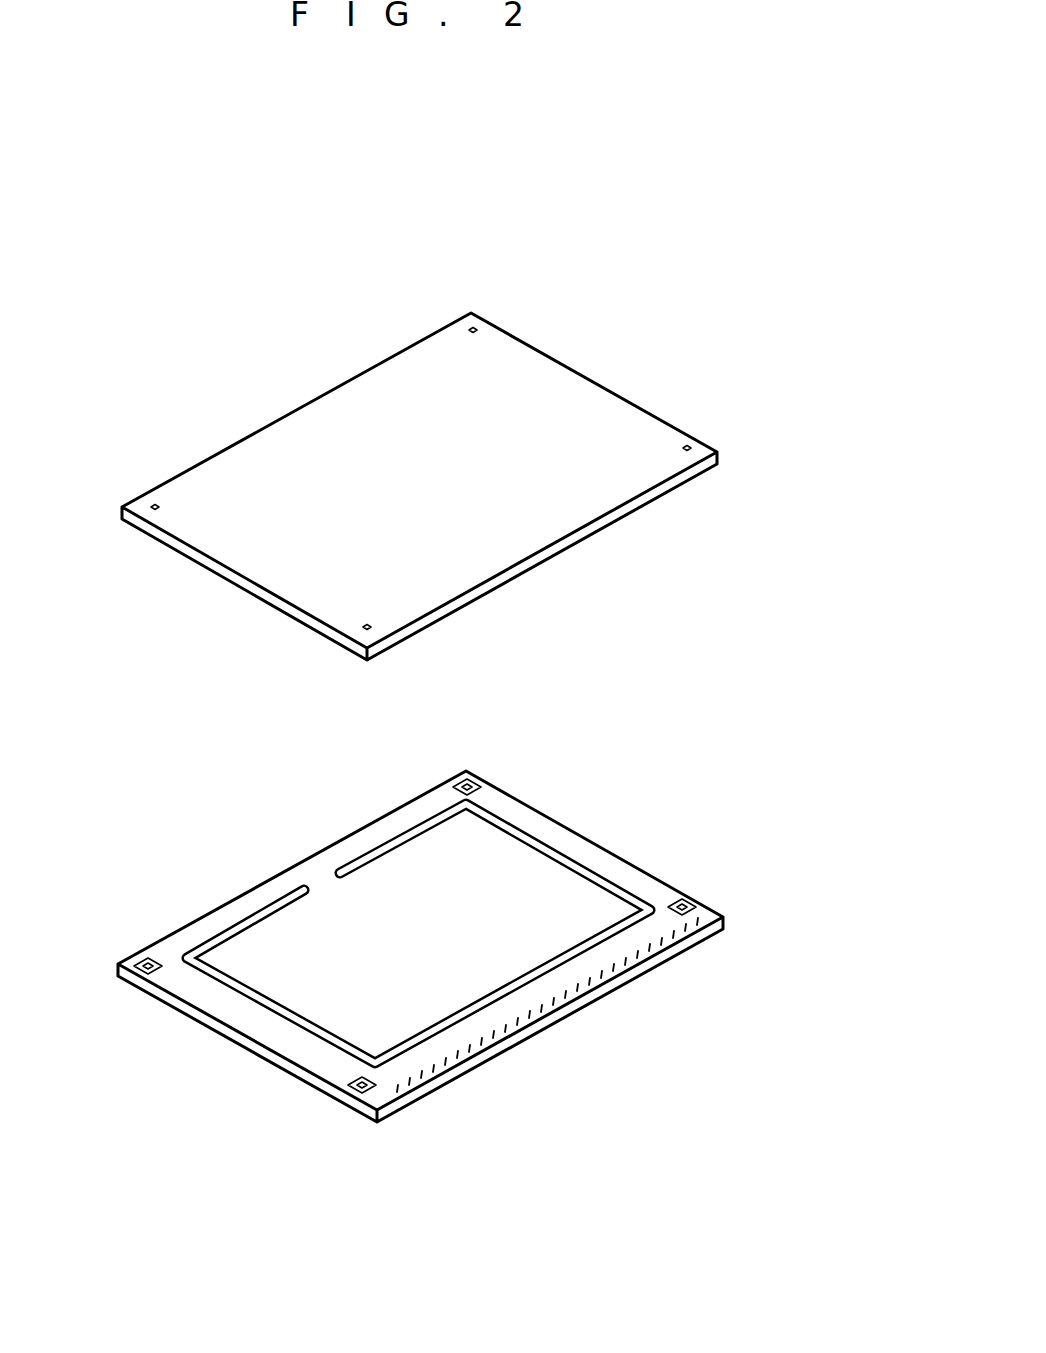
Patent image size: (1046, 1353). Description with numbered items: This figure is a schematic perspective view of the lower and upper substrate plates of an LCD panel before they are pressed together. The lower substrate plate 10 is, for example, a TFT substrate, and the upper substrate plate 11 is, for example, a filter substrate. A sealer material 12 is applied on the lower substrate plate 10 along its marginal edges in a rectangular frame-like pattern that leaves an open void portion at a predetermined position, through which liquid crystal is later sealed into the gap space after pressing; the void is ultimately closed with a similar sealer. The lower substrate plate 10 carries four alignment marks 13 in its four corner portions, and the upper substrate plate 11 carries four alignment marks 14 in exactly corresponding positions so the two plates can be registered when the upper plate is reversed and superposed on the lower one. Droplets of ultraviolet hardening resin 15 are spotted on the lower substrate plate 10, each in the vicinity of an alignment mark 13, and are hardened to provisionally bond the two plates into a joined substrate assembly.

The lower substrate plate 10 is at (453, 1077).
The upper substrate plate 11 is at (362, 403).
The sealer material 12 is at (497, 1003).
The alignment marks 13 is at (150, 962).
The alignment marks 14 is at (153, 503).
The ultraviolet hardening resin 15 is at (172, 955).